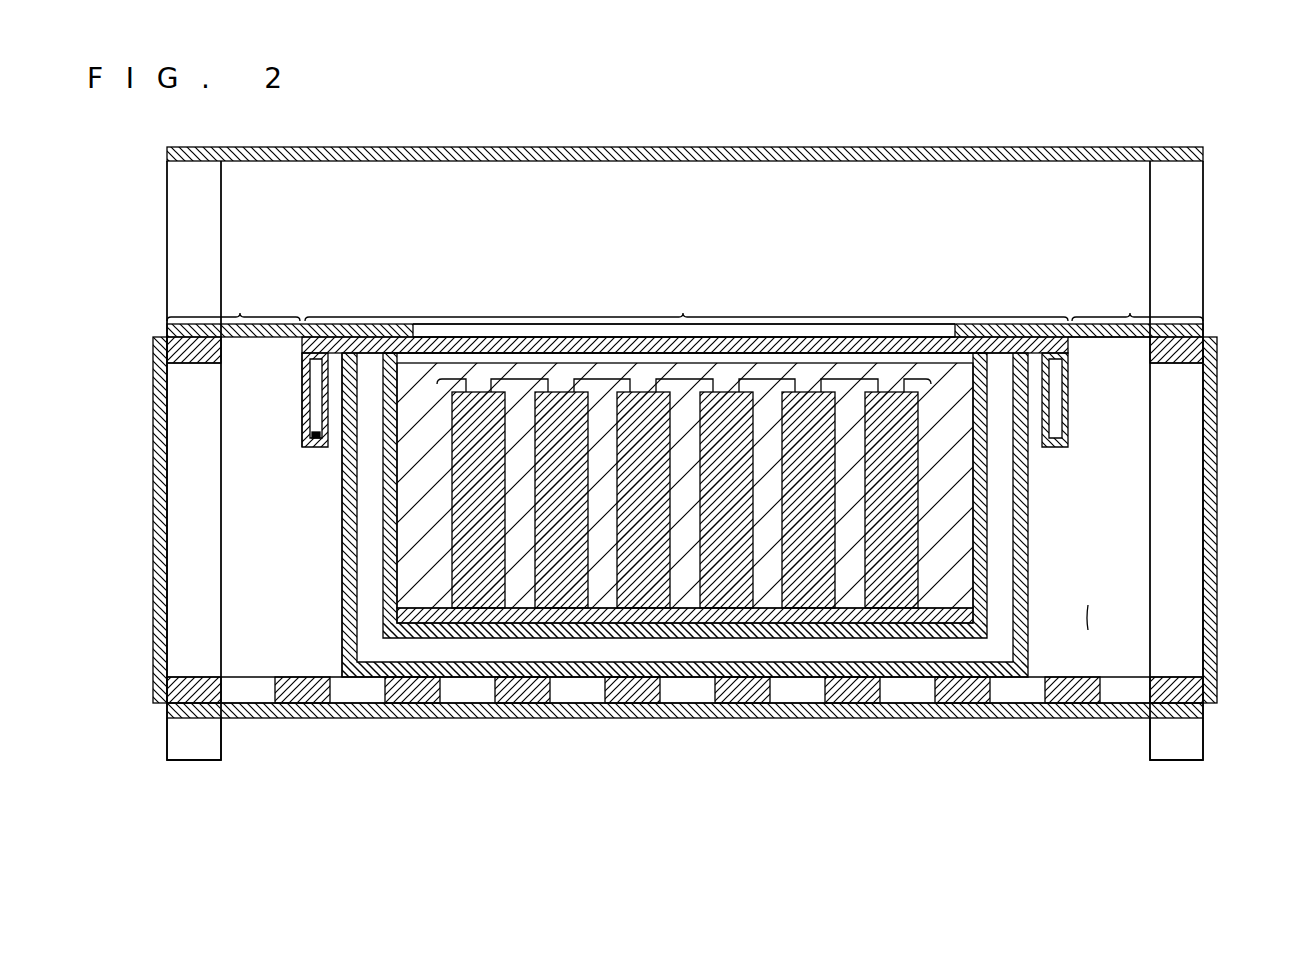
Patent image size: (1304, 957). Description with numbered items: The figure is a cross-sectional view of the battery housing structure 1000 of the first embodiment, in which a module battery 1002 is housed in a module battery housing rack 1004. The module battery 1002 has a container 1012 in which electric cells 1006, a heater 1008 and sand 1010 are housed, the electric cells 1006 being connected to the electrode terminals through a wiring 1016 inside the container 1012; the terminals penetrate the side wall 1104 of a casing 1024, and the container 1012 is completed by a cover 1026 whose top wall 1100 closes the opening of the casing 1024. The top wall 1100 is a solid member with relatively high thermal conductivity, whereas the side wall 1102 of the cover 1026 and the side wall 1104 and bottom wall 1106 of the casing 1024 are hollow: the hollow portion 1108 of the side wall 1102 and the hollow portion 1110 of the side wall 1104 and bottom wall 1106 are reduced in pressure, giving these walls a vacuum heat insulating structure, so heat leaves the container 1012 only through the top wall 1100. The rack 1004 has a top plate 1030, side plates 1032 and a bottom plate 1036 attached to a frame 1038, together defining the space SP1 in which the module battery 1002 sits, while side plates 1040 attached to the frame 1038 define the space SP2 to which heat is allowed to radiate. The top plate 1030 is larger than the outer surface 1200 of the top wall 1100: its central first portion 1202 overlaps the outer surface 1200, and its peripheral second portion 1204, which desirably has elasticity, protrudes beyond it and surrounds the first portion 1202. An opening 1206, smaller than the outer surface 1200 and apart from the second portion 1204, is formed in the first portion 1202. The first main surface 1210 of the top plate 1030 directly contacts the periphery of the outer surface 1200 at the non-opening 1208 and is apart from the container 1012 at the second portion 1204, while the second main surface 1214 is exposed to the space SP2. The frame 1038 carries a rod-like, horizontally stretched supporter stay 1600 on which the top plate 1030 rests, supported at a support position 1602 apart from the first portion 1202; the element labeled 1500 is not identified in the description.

The battery housing structure 1000 is at (1158, 146).
The top cover plate 1500 is at (689, 147).
The side plates 1040 is at (1115, 246).
The container 1012 is at (72, 440).
The frame 1038 is at (1206, 737).
The space to which heat is allowed to radiate SP2 is at (450, 215).
The space in which the module battery is housed SP1 is at (1089, 637).
The second portion 1204 is at (685, 306).
The first portion 1202 is at (686, 305).
The top plate 1030 is at (1205, 330).
The second main surface 1214 is at (365, 324).
The non-opening 1208 is at (986, 324).
The outer surface 1200 is at (583, 337).
The opening 1206 is at (815, 330).
The top wall 1100 is at (503, 337).
The support position 1602 is at (187, 355).
The supporter stay 1600 is at (195, 365).
The first main surface 1210 is at (1107, 338).
The side plates 1032 is at (153, 422).
The side wall 1102 is at (302, 398).
The hollow portion 1108 is at (313, 438).
The cover 1026 is at (302, 432).
The side wall 1104 is at (342, 500).
The casing 1024 is at (342, 543).
The hollow portion 1110 is at (573, 650).
The module battery 1002 is at (342, 632).
The electric cells 1006 is at (655, 640).
The wiring 1016 is at (930, 395).
The heater 1008 is at (790, 620).
The sand 1010 is at (848, 597).
The module battery housing rack 1004 is at (221, 664).
The bottom wall 1106 is at (472, 690).
The bottom plate 1036 is at (278, 718).